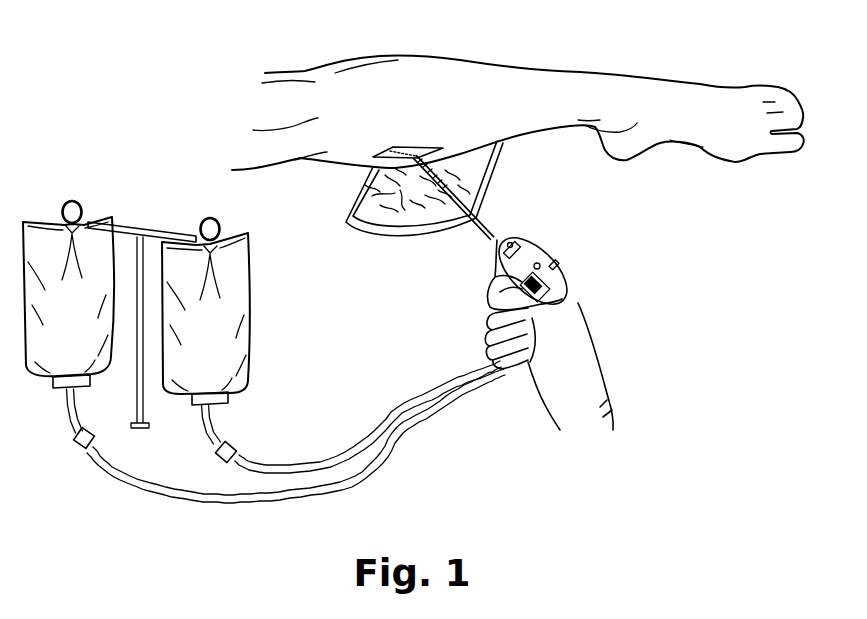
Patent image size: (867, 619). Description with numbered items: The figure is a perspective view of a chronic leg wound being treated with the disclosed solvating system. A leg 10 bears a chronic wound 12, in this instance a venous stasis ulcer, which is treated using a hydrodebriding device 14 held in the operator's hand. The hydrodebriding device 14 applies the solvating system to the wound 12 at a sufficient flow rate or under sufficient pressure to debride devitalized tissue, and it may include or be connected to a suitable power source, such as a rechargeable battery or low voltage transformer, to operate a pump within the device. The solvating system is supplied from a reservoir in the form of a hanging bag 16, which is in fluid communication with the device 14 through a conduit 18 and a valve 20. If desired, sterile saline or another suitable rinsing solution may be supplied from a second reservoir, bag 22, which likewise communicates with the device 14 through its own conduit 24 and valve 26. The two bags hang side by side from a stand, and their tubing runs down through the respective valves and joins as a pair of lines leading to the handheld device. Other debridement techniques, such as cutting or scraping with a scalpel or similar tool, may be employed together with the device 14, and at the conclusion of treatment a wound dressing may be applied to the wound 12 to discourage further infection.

The leg 10 is at (540, 71).
The chronic wound 12 is at (418, 150).
The hydrodebriding device 14 is at (522, 240).
The bag 16 is at (250, 283).
The conduit 18 is at (213, 424).
The valve 20 is at (238, 447).
The bag 22 is at (96, 254).
The conduit 24 is at (354, 216).
The valve 26 is at (80, 446).